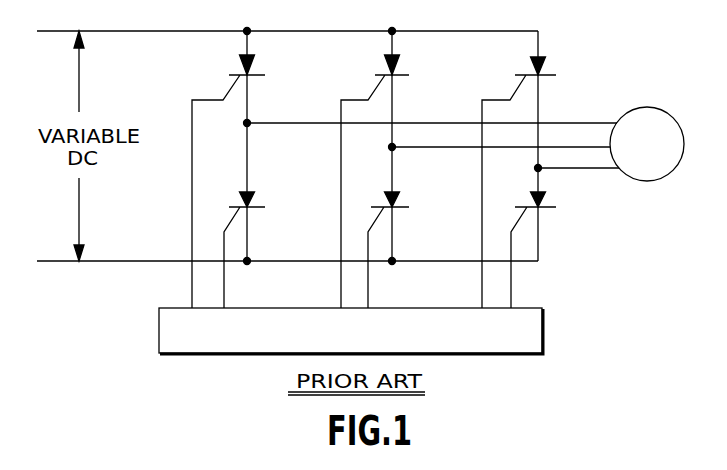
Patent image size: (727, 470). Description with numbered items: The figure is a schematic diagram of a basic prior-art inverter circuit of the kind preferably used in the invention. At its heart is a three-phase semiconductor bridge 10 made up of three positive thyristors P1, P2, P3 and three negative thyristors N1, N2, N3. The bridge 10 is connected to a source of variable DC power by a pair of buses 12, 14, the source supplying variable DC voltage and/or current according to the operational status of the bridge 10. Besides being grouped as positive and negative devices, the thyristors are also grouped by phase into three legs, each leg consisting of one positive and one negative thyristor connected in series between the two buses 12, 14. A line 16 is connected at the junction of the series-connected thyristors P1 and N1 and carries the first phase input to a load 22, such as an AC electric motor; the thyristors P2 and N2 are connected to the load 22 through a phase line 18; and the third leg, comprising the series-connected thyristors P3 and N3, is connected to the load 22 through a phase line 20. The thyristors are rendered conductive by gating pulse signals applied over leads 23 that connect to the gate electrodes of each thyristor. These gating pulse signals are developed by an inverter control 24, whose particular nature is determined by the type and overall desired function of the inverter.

The three-phase semiconductor bridge 10 is at (594, 33).
The bus 12 is at (173, 33).
The bus 14 is at (140, 260).
The line 16 is at (561, 125).
The phase line 18 is at (524, 151).
The phase line 20 is at (600, 170).
The load 22 is at (678, 113).
The leads 23 is at (217, 293).
The inverter control 24 is at (548, 316).
The positive thyristor P1 is at (259, 64).
The positive thyristor P2 is at (404, 64).
The positive thyristor P3 is at (549, 68).
The negative thyristor N1 is at (258, 218).
The negative thyristor N2 is at (402, 212).
The negative thyristor N3 is at (546, 215).